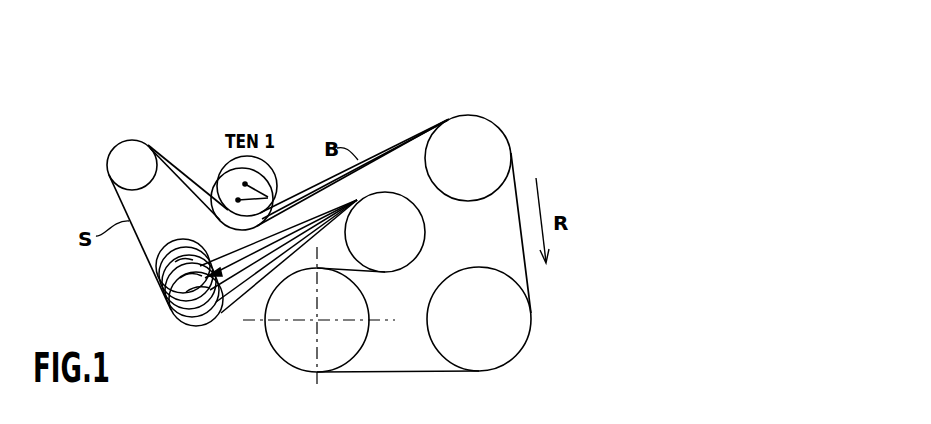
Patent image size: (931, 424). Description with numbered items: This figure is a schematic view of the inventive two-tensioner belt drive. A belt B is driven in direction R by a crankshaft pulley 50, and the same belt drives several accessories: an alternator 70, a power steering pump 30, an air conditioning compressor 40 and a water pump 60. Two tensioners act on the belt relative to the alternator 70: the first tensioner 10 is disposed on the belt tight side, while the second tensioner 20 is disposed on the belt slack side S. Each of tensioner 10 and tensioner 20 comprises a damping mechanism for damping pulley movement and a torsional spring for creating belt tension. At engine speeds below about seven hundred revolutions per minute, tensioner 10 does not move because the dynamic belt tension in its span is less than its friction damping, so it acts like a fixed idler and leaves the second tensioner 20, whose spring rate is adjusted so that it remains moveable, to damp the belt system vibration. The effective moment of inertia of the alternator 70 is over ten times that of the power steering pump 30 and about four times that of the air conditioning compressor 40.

The tensioner 10 is at (241, 105).
The second tensioner 20 is at (151, 292).
The power steering pump 30 is at (511, 151).
The air conditioning compressor 40 is at (531, 331).
The crankshaft pulley 50 is at (362, 345).
The water pump 60 is at (425, 235).
The alternator 70 is at (110, 153).